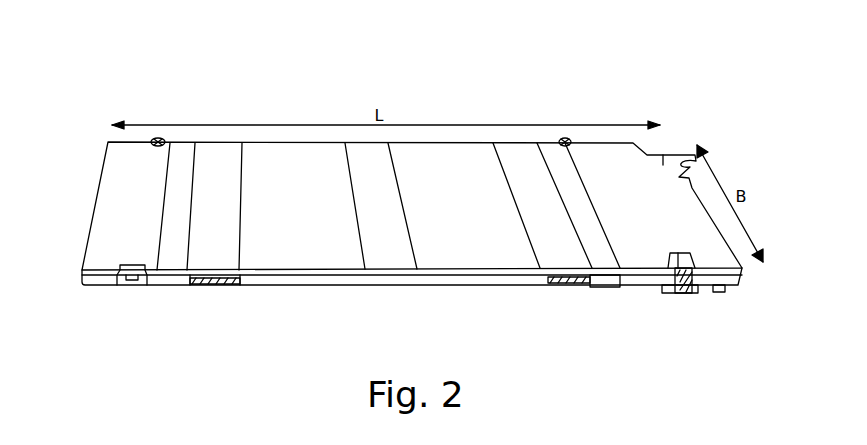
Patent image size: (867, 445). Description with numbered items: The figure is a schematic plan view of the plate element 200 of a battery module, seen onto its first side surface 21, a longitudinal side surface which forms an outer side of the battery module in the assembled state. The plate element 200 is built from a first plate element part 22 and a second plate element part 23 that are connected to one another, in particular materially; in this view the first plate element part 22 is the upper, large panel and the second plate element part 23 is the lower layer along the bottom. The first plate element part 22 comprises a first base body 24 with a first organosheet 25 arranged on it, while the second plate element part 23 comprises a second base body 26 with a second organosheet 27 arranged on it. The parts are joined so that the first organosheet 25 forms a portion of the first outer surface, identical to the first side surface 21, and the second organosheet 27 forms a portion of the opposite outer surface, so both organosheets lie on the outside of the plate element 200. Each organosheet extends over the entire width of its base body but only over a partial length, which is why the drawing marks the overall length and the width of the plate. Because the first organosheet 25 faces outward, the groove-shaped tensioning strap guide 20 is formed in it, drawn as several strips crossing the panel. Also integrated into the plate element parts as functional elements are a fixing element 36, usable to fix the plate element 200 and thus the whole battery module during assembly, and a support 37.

The plate element 200 is at (598, 93).
The tensioning strap guide 20 is at (215, 262).
The first side surface 21 is at (665, 153).
The first plate element part 22 is at (66, 256).
The second plate element part 23 is at (79, 306).
The first base body 24 is at (108, 268).
The first organosheet 25 is at (483, 262).
The second base body 26 is at (172, 290).
The second organosheet 27 is at (293, 290).
The fixing element 36 is at (685, 293).
The support 37 is at (132, 290).